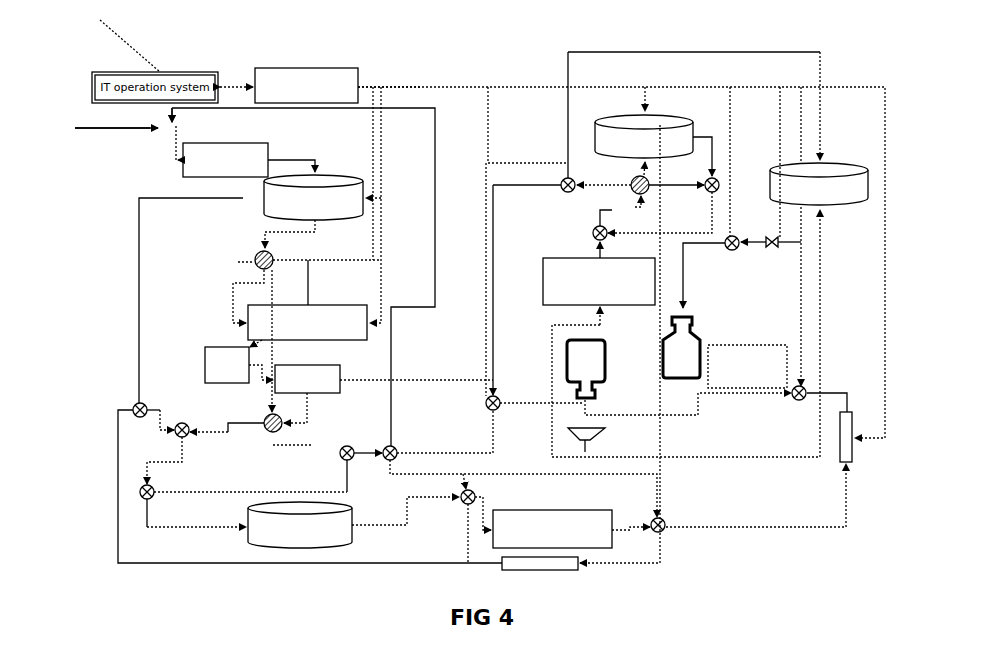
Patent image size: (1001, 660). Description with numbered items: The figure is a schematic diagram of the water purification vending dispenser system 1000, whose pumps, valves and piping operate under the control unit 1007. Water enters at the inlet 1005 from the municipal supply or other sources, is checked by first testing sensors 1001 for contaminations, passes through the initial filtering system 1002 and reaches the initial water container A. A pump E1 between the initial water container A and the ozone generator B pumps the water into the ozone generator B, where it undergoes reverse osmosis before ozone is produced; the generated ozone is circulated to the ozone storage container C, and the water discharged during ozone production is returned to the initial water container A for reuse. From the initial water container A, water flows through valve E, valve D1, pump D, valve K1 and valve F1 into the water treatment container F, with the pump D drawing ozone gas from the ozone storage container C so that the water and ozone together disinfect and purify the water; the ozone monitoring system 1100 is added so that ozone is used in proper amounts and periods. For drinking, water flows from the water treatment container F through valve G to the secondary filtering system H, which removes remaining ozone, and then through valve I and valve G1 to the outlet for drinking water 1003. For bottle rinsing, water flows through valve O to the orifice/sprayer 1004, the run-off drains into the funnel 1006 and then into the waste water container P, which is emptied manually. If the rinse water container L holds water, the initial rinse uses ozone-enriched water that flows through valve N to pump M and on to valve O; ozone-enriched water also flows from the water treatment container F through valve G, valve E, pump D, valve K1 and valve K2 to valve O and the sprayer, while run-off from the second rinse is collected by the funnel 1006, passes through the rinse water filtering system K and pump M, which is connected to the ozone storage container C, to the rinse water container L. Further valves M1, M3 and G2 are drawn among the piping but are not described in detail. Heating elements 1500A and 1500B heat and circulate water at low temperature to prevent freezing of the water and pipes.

The system 1000 is at (372, 60).
The control unit 1007 is at (372, 87).
The inlet 1005 is at (118, 134).
The first testing sensors 1001 is at (162, 132).
The initial filtering system 1002 is at (262, 144).
The ozone monitoring system 1100 is at (340, 385).
The outlet for drinking water 1003 is at (684, 301).
The orifice/sprayer for rinsing bottles 1004 is at (589, 406).
The funnel 1006 is at (602, 451).
The heating element 1500A is at (540, 563).
The heating element 1500B is at (836, 454).
The initial water container A is at (303, 198).
The ozone generator including reverse osmosis filtering system B is at (307, 332).
The ozone storage container C is at (227, 365).
The pump D is at (267, 431).
The valve D1 is at (189, 420).
The valve E is at (133, 403).
The pump E1 is at (239, 262).
The water treatment container F is at (300, 525).
The valve F1 is at (159, 483).
The valve G is at (456, 506).
The valve G1 is at (795, 404).
The valve G2 is at (726, 254).
The secondary filtering system H is at (552, 520).
The valve I is at (667, 535).
The rinse water filtering system K is at (599, 281).
The valve K1 is at (333, 450).
The valve K2 is at (395, 442).
The rinse water container L is at (634, 136).
The pump M is at (630, 193).
The valve M1 is at (554, 179).
The valve M3 is at (698, 178).
The valve N is at (589, 236).
The valve O is at (484, 411).
The waste water container P is at (819, 196).